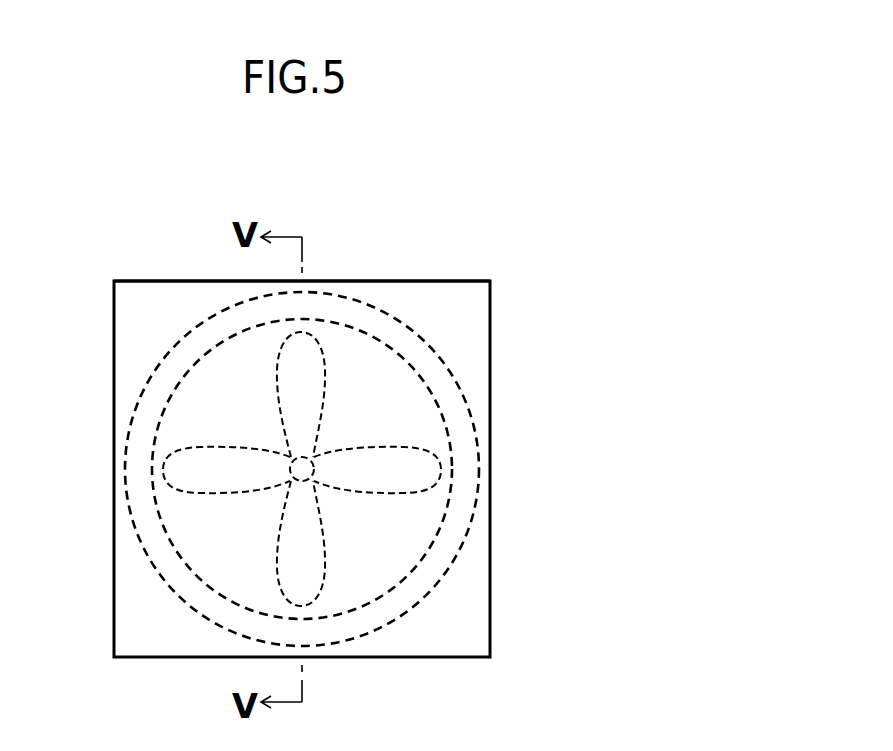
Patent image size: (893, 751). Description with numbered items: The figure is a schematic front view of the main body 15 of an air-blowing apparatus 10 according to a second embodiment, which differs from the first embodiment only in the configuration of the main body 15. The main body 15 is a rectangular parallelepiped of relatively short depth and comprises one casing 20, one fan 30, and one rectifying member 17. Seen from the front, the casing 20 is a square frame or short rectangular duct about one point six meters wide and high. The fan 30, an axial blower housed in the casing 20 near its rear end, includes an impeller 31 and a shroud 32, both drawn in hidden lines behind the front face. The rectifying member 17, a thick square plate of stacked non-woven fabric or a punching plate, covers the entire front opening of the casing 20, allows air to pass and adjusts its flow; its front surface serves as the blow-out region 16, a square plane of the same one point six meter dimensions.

The air-blowing apparatus 10 is at (111, 206).
The main body 15 is at (442, 272).
The blow-out region 16 is at (480, 376).
The rectifying member 17 is at (468, 597).
The casing 20 is at (490, 312).
The fan 30 is at (210, 396).
The impeller 31 is at (207, 489).
The shroud 32 is at (209, 575).